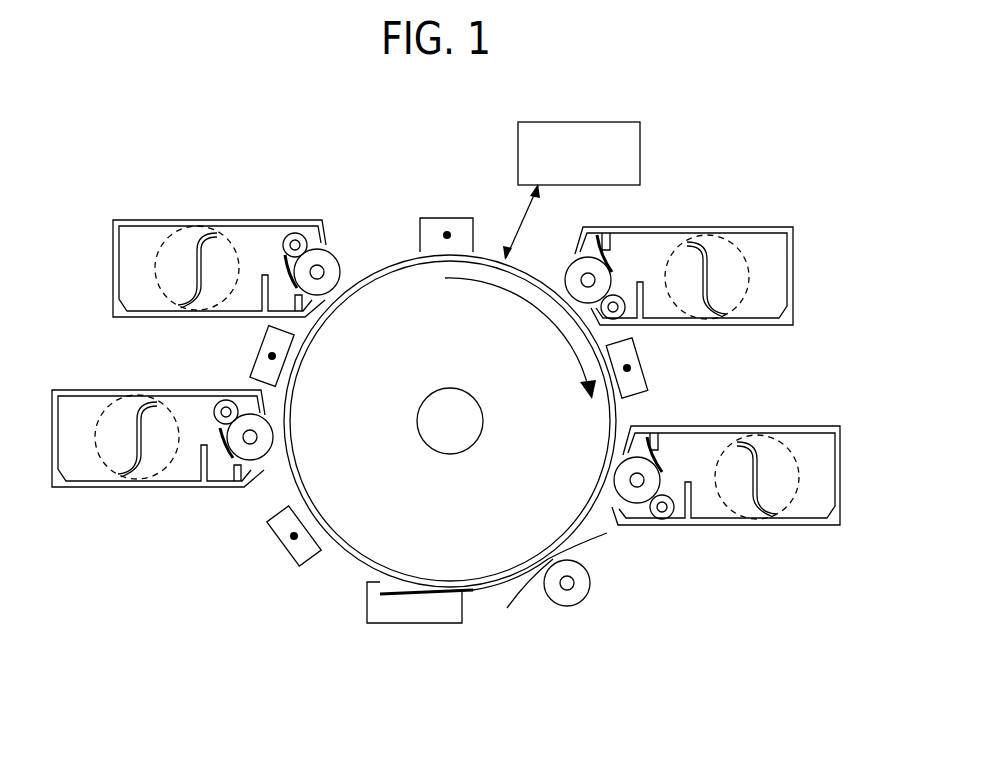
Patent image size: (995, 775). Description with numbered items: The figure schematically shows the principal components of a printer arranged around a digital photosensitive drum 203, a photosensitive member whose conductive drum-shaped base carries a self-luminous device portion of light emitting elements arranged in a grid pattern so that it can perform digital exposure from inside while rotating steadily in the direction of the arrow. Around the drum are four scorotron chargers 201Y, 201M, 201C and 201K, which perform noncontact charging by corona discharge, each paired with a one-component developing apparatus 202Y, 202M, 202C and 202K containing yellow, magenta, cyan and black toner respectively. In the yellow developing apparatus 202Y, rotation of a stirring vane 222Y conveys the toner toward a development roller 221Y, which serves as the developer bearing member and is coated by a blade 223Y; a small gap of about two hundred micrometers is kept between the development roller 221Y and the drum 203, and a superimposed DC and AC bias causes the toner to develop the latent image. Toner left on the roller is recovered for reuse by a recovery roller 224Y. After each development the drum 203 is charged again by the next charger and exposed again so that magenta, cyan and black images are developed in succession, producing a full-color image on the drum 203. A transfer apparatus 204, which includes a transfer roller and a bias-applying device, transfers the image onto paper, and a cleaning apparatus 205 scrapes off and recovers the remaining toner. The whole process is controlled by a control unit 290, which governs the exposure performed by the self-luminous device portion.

The control unit 290 is at (610, 133).
The charger 201C is at (435, 227).
The charger 201M is at (248, 367).
The charger 201Y is at (293, 555).
The charger 201K is at (632, 355).
The one-component developing apparatus 202M is at (152, 240).
The one-component developing apparatus 202Y is at (83, 468).
The one-component developing apparatus 202C is at (765, 243).
The one-component developing apparatus 202K is at (805, 510).
The development roller 221Y is at (250, 458).
The stirring vane 222Y is at (133, 413).
The blade 223Y is at (210, 488).
The recovery roller 224Y is at (217, 408).
The digital photosensitive drum 203 is at (470, 565).
The transfer apparatus 204 is at (580, 592).
The cleaning apparatus 205 is at (423, 613).